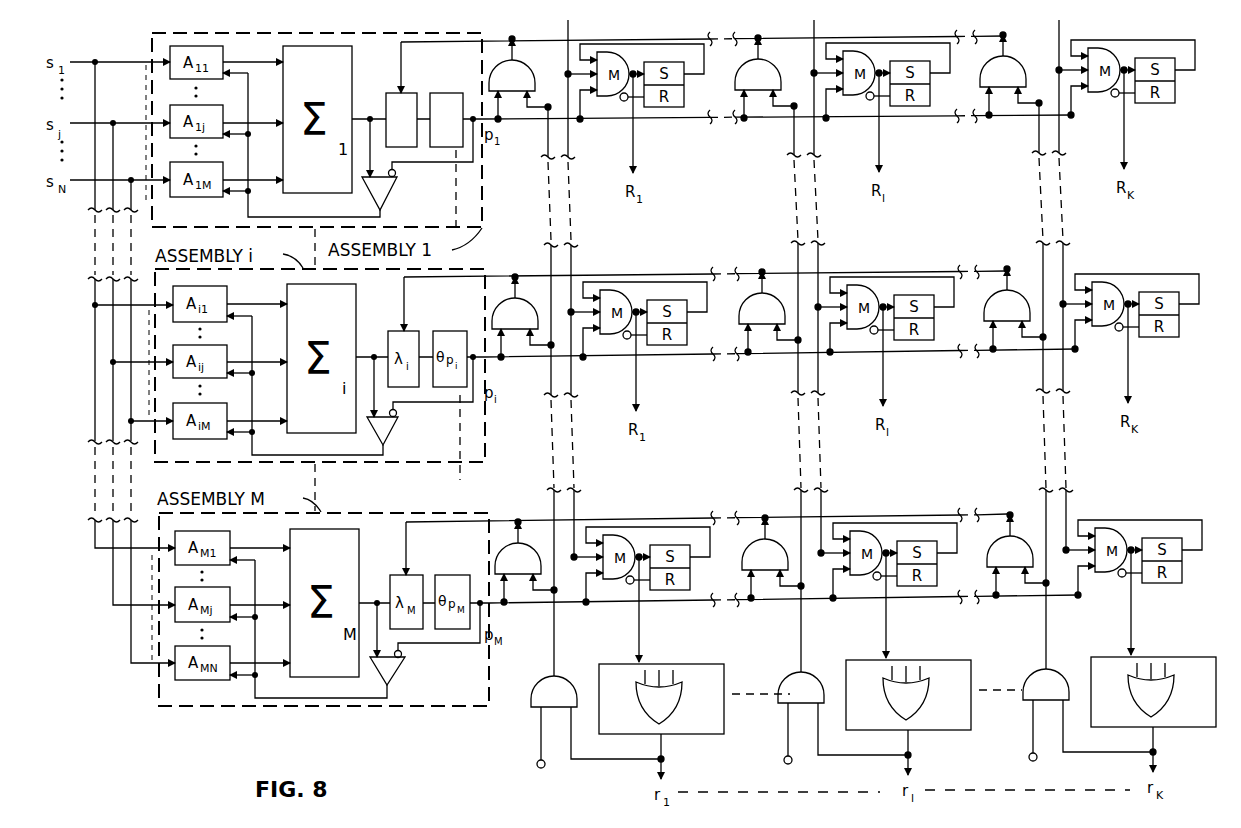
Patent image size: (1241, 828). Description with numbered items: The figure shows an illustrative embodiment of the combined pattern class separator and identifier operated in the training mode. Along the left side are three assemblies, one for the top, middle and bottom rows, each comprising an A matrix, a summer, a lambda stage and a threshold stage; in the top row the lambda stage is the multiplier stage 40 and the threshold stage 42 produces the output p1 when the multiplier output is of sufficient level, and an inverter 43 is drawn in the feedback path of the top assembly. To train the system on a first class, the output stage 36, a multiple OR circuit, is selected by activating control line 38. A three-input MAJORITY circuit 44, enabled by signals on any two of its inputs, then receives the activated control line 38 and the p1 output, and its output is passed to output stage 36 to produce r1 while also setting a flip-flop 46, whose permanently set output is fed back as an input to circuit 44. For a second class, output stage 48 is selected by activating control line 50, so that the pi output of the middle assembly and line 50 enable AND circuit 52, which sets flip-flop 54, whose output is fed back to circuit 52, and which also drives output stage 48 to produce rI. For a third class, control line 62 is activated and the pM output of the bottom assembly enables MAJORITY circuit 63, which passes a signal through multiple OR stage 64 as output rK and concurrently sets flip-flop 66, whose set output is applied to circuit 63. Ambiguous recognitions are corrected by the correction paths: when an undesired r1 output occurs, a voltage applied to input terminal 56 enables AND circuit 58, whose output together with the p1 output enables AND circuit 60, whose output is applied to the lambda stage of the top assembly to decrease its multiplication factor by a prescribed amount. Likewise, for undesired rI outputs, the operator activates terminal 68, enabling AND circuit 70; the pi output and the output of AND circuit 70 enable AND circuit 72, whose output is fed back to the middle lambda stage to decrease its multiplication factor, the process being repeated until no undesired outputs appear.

The output stage R1 36 is at (714, 672).
The control line 38 is at (571, 269).
The multiplier stage 40 is at (409, 94).
The threshold stage 42 is at (448, 96).
The inverter 43 is at (390, 190).
The three-input MAJORITY circuit 44 is at (618, 101).
The flip-flop 46 is at (667, 112).
The output stage RI 48 is at (958, 670).
The control line 50 is at (819, 247).
The AND circuit 52 is at (860, 287).
The flip-flop 54 is at (906, 299).
The input terminal 56 is at (537, 762).
The AND circuit 58 is at (563, 690).
The AND circuit 60 is at (526, 80).
The control line 62 is at (1066, 268).
The MAJORITY circuit 63 is at (1107, 529).
The multiple OR stage 64 is at (1205, 667).
The flip-flop 66 is at (1155, 539).
The terminal 68 is at (784, 759).
The AND circuit 70 is at (810, 688).
The AND circuit 72 is at (770, 306).